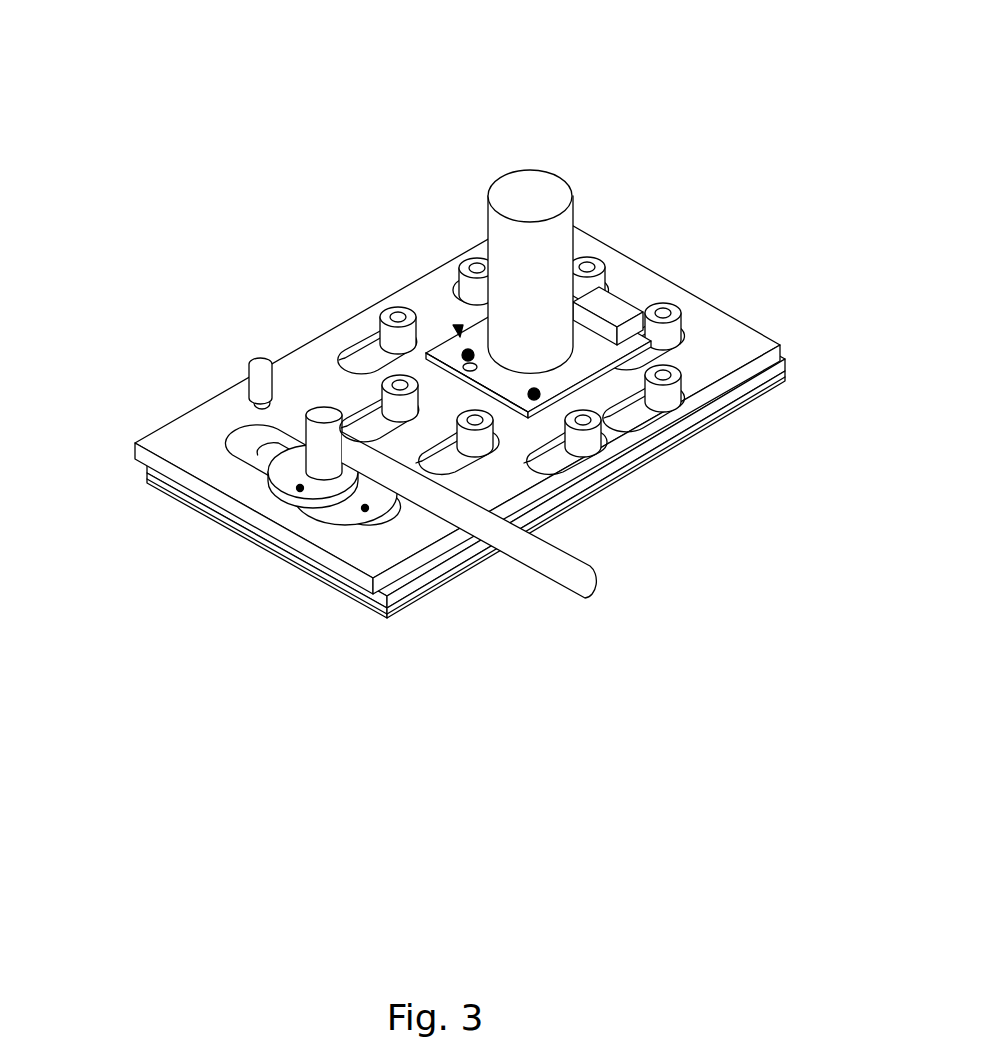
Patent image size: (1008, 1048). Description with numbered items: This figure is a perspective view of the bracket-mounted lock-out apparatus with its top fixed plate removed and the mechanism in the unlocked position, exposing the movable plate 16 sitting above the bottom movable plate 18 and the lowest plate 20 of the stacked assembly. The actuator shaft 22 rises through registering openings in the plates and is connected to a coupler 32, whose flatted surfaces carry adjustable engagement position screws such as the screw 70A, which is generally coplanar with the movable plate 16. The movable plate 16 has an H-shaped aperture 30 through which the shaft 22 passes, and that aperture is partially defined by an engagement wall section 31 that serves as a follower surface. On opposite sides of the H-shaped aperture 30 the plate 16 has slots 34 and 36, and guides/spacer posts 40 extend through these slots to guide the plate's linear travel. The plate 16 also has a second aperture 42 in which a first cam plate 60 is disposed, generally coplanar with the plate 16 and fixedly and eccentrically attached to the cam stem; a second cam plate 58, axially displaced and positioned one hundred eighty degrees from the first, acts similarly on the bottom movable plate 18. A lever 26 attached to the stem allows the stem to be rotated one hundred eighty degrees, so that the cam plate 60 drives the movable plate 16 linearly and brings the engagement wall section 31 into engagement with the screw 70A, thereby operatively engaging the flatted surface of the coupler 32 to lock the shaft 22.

The movable plate 16 is at (628, 292).
The bottom movable plate 18 is at (780, 368).
The plate 20 is at (258, 545).
The actuator shaft 22 is at (518, 180).
The lever 26 is at (588, 583).
The H-shaped aperture 30 is at (598, 323).
The engagement wall section 31 is at (480, 390).
The coupler 32 is at (570, 370).
The slot 34 is at (612, 403).
The slot 36 is at (422, 295).
The guides/spacer posts 40 is at (400, 318).
The second aperture 42 is at (245, 438).
The second cam plate 58 is at (365, 508).
The first cam plate 60 is at (300, 488).
The engagement position screw 70A is at (458, 330).